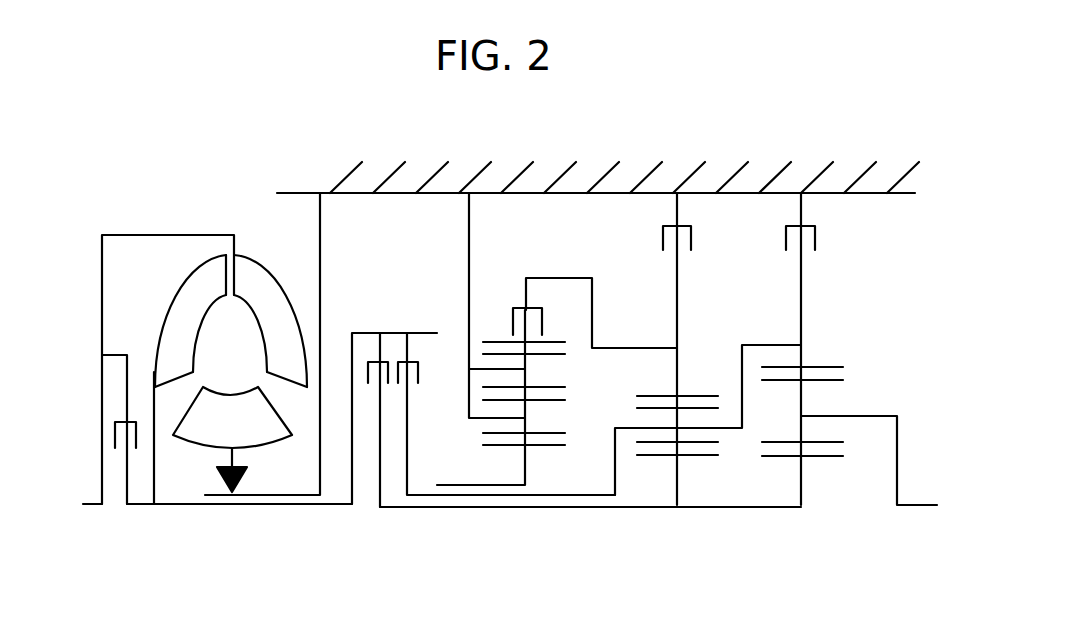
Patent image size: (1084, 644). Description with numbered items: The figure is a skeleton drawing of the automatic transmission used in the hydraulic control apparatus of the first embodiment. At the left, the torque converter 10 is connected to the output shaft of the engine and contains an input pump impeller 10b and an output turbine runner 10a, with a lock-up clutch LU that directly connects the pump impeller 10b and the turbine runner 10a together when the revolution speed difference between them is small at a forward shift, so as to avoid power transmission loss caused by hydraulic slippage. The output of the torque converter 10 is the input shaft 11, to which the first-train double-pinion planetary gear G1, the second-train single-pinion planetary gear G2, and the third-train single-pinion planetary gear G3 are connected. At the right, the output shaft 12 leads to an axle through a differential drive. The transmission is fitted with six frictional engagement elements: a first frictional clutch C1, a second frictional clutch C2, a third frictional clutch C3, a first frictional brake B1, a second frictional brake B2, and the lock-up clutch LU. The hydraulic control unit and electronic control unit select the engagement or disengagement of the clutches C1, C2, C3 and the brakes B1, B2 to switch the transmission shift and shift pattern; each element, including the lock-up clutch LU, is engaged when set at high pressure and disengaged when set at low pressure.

The torque converter 10 is at (251, 230).
The turbine runner 10a is at (187, 282).
The pump impeller 10b is at (257, 265).
The lock-up clutch LU is at (115, 427).
The input shaft 11 is at (178, 504).
The output shaft 12 is at (913, 507).
The first frictional clutch C1 is at (365, 370).
The second frictional clutch C2 is at (427, 370).
The third frictional clutch C3 is at (513, 318).
The first frictional brake B1 is at (662, 235).
The second frictional brake B2 is at (785, 235).
The first-train double-pinion planetary gear G1 is at (570, 386).
The second-train single-pinion planetary gear G2 is at (699, 372).
The third-train single-pinion planetary gear G3 is at (839, 352).